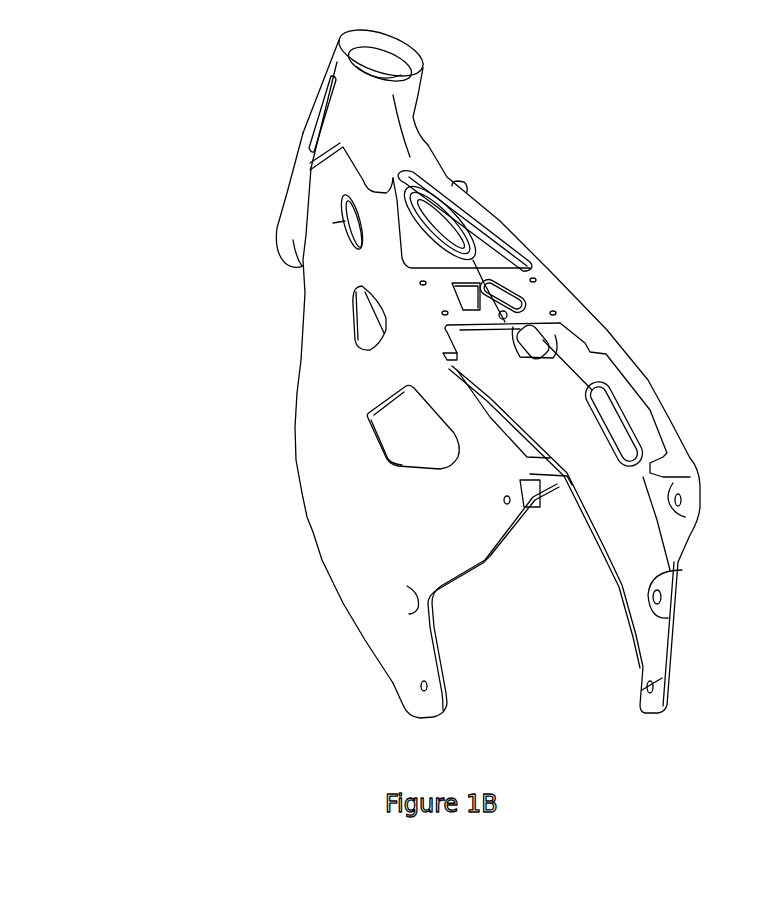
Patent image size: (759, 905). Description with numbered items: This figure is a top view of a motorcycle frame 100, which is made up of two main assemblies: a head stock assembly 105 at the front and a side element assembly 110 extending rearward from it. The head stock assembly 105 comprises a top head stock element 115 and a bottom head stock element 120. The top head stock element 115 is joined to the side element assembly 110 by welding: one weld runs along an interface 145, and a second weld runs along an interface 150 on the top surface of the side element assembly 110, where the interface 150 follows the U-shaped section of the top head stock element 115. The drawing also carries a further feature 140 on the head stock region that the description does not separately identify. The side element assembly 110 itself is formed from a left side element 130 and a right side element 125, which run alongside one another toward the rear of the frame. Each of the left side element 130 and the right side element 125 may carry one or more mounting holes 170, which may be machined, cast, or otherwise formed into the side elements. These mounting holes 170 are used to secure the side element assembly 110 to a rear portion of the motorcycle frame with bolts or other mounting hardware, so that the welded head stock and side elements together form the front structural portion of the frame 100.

The motorcycle frame 100 is at (50, 702).
The head stock assembly 105 is at (278, 90).
The side element assembly 110 is at (668, 358).
The top head stock element 115 is at (340, 72).
The bottom head stock element 120 is at (288, 195).
The right side element 125 is at (575, 290).
The left side element 130 is at (312, 502).
The slot 140 is at (300, 163).
The interface 145 is at (352, 152).
The interface 150 is at (432, 178).
The mounting holes 170 is at (417, 688).